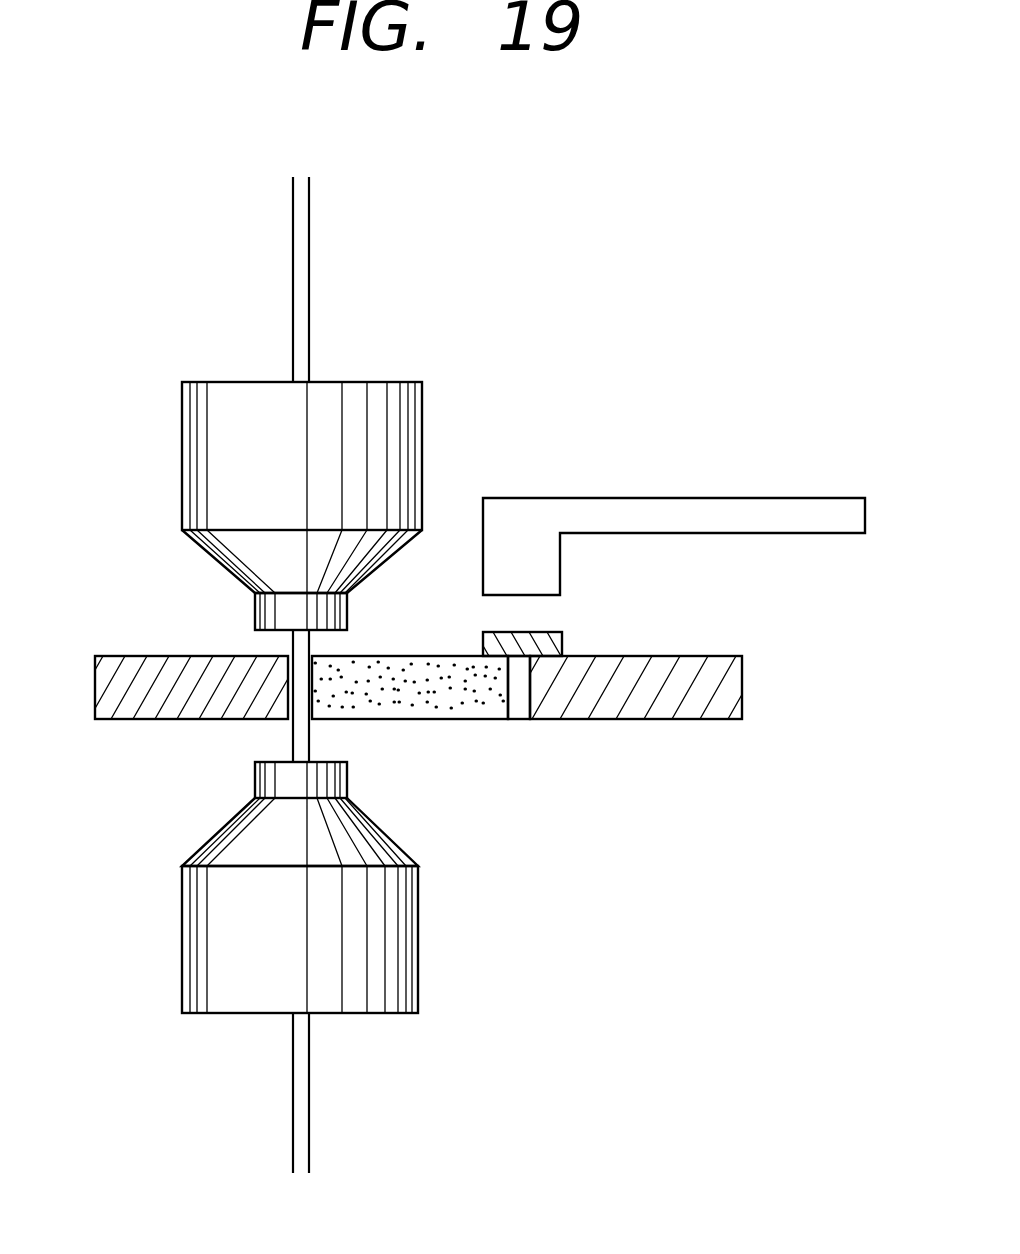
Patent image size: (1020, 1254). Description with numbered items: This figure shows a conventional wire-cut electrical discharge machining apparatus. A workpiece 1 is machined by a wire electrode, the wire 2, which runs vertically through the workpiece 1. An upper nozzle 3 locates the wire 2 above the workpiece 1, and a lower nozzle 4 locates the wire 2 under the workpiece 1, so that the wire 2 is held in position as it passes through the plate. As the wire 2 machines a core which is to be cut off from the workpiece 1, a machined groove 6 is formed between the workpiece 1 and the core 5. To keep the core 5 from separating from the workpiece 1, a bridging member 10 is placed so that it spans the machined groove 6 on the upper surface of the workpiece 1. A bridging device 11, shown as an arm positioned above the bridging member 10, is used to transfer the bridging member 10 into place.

The workpiece 1 is at (730, 682).
The wire 2 is at (303, 262).
The upper nozzle 3 is at (225, 418).
The lower nozzle 4 is at (200, 902).
The core 5 is at (462, 693).
The machined groove 6 is at (520, 703).
The bridging member 10 is at (563, 640).
The bridging device 11 is at (815, 515).